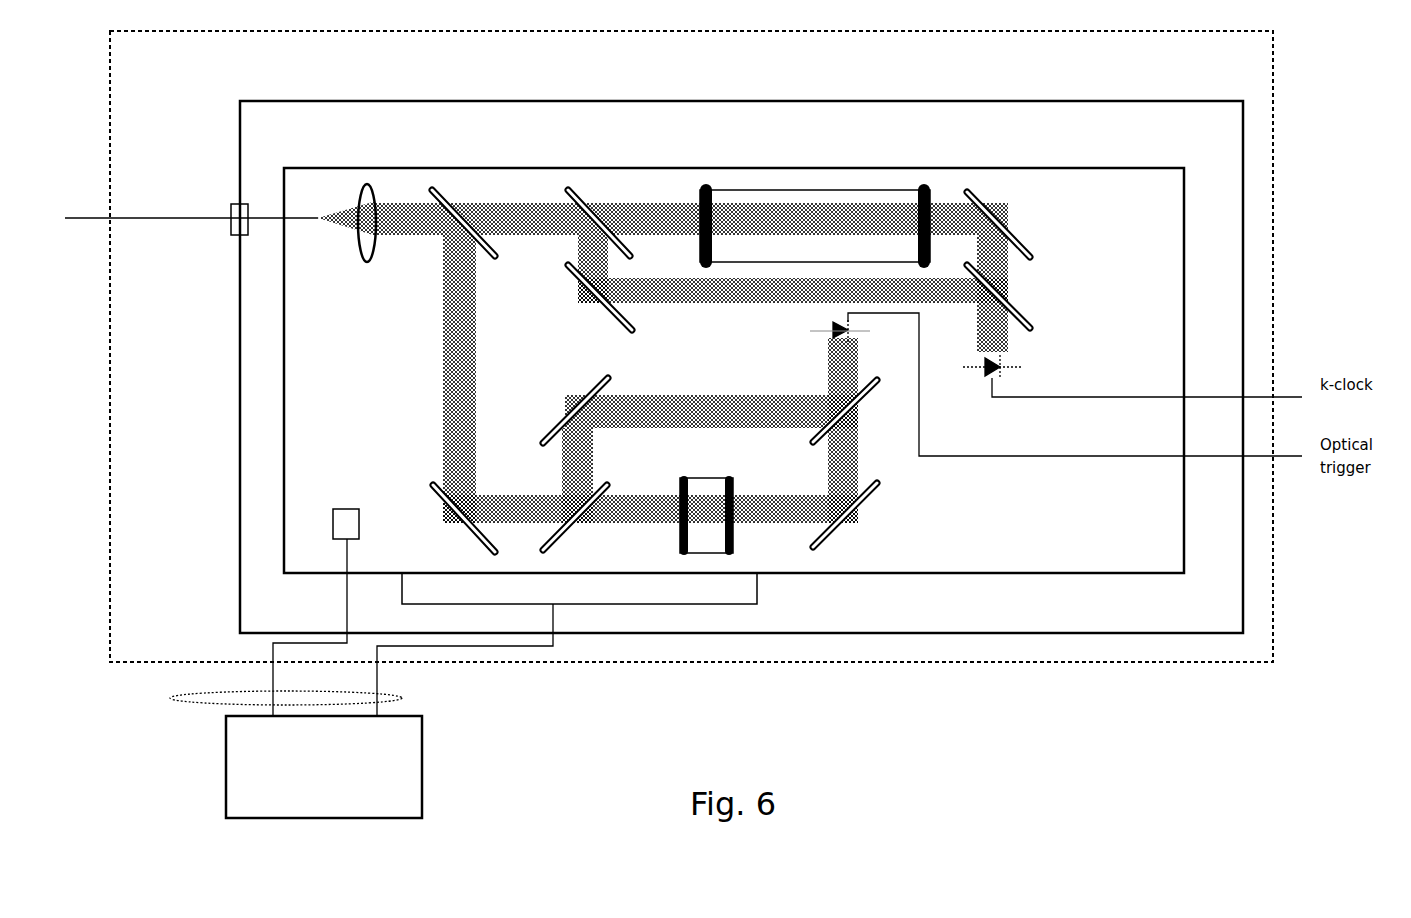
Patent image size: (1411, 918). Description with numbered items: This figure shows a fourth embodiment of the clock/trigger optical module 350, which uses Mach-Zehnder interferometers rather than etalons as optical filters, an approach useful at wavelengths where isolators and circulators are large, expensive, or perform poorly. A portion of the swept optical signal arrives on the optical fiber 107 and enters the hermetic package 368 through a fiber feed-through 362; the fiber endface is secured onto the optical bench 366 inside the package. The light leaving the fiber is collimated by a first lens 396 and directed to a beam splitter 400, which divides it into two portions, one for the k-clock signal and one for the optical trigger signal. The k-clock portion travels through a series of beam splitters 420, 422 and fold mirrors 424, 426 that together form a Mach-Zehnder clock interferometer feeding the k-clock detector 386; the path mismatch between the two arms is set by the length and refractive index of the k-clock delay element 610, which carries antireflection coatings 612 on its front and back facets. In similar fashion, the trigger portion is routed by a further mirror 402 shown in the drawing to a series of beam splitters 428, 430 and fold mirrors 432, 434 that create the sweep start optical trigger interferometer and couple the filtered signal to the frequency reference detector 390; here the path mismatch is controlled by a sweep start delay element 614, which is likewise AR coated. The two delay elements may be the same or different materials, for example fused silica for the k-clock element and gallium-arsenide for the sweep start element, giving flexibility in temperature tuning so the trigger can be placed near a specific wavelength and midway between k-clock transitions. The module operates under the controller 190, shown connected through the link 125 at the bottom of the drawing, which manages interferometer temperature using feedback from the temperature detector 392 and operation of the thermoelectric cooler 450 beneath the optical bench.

The clock/trigger optical module 350 is at (691, 346).
The hermetic package 368 is at (1243, 545).
The optical bench 366 is at (1047, 573).
The thermoelectric cooler 450 is at (579, 588).
The optical fiber 107 is at (168, 218).
The fiber feed-through 362 is at (237, 204).
The first lens 396 is at (368, 262).
The beam splitter 400 is at (457, 228).
The beam splitter 420 is at (587, 220).
The fold mirror 426 is at (592, 289).
The fold mirror 424 is at (1020, 238).
The beam splitter 422 is at (1020, 310).
The fold mirror 434 is at (582, 405).
The mirror 402 is at (457, 515).
The beam splitter 428 is at (576, 523).
The beam splitter 430 is at (855, 412).
The fold mirror 432 is at (838, 532).
The k-clock delay element 610 is at (772, 262).
The sweep start delay element 614 is at (705, 480).
The antireflection coatings 612 is at (700, 194).
The frequency reference detector 390 is at (832, 331).
The k-clock detector 386 is at (1000, 367).
The temperature detector 392 is at (345, 508).
The cable 125 is at (266, 703).
The controller 190 is at (324, 767).